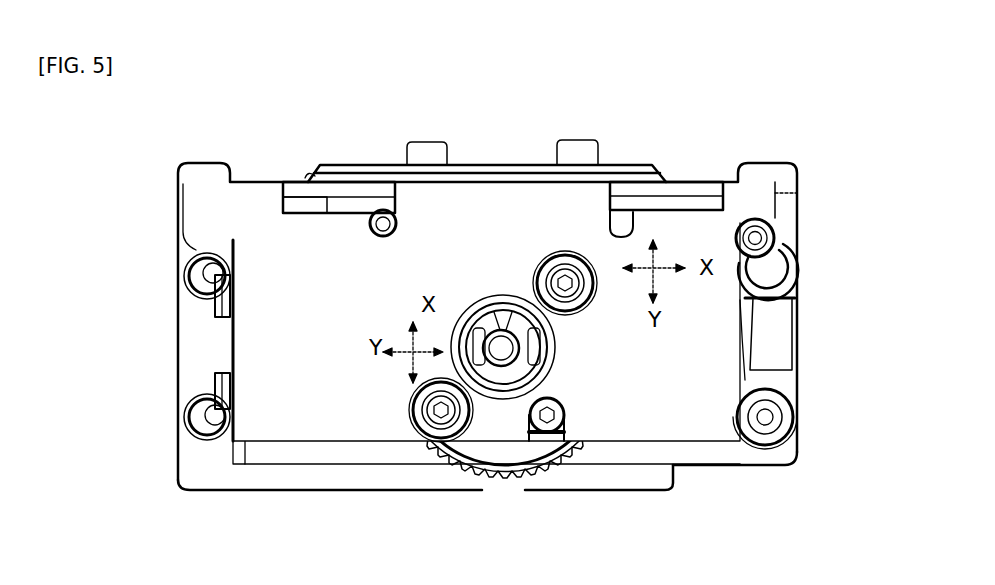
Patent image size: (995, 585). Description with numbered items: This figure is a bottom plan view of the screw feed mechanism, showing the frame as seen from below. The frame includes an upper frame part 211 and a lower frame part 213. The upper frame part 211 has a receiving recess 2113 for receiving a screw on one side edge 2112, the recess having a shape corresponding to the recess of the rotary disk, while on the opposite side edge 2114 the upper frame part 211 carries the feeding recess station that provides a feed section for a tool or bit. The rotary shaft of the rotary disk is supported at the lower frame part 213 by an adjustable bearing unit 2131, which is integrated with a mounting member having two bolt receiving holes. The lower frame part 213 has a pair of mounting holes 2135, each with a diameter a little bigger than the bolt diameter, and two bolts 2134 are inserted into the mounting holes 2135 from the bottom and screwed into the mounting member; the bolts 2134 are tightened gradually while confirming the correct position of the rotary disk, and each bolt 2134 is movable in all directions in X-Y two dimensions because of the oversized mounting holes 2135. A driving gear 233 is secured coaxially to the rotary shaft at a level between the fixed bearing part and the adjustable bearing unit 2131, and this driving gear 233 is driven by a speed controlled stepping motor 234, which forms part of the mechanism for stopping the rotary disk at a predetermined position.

The upper frame part 211 is at (230, 493).
The side edge 2112 is at (413, 513).
The receiving recess 2113 is at (505, 478).
The opposite side edge 2114 is at (382, 165).
The lower frame part 213 is at (302, 259).
The adjustable bearing unit 2131 is at (497, 298).
The bolt 2134 is at (580, 300).
The mounting hole 2135 is at (563, 252).
The driving gear 233 is at (550, 447).
The stepping motor 234 is at (773, 343).